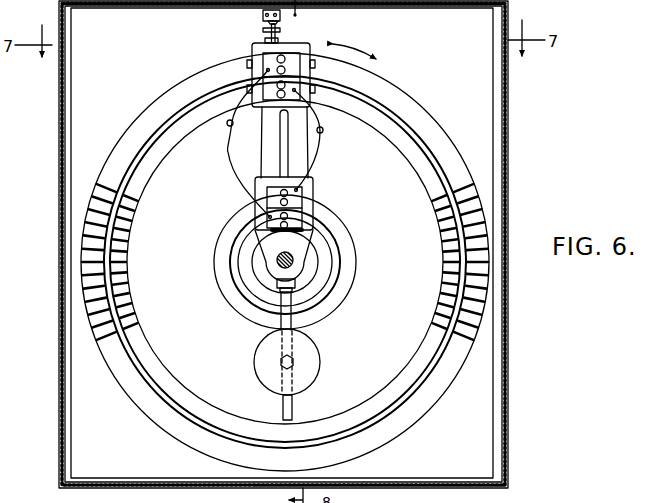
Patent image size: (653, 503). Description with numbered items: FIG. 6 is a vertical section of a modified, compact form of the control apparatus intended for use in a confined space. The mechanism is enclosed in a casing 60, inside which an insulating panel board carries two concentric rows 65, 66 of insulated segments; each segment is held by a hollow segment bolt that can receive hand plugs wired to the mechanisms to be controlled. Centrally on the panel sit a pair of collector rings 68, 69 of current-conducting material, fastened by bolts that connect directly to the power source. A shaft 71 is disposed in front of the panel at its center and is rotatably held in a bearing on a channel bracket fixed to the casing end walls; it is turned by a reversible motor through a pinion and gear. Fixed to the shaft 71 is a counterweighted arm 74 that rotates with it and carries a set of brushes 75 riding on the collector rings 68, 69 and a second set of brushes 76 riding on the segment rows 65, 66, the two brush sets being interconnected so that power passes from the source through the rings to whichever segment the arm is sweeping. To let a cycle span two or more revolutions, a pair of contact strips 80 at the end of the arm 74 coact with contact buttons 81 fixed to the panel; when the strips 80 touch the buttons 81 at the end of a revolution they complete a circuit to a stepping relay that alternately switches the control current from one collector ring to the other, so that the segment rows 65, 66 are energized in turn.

The casing 60 is at (509, 230).
The concentric row of insulated segments 65 is at (414, 106).
The concentric row of insulated segments 66 is at (430, 167).
The collector ring 68 is at (346, 248).
The collector ring 69 is at (318, 276).
The shaft 71 is at (277, 260).
The counterweighted arm 74 is at (291, 406).
The set of brushes 75 is at (294, 218).
The second set of brushes 76 is at (272, 60).
The contact strips 80 is at (278, 43).
The contact buttons 81 is at (270, 32).